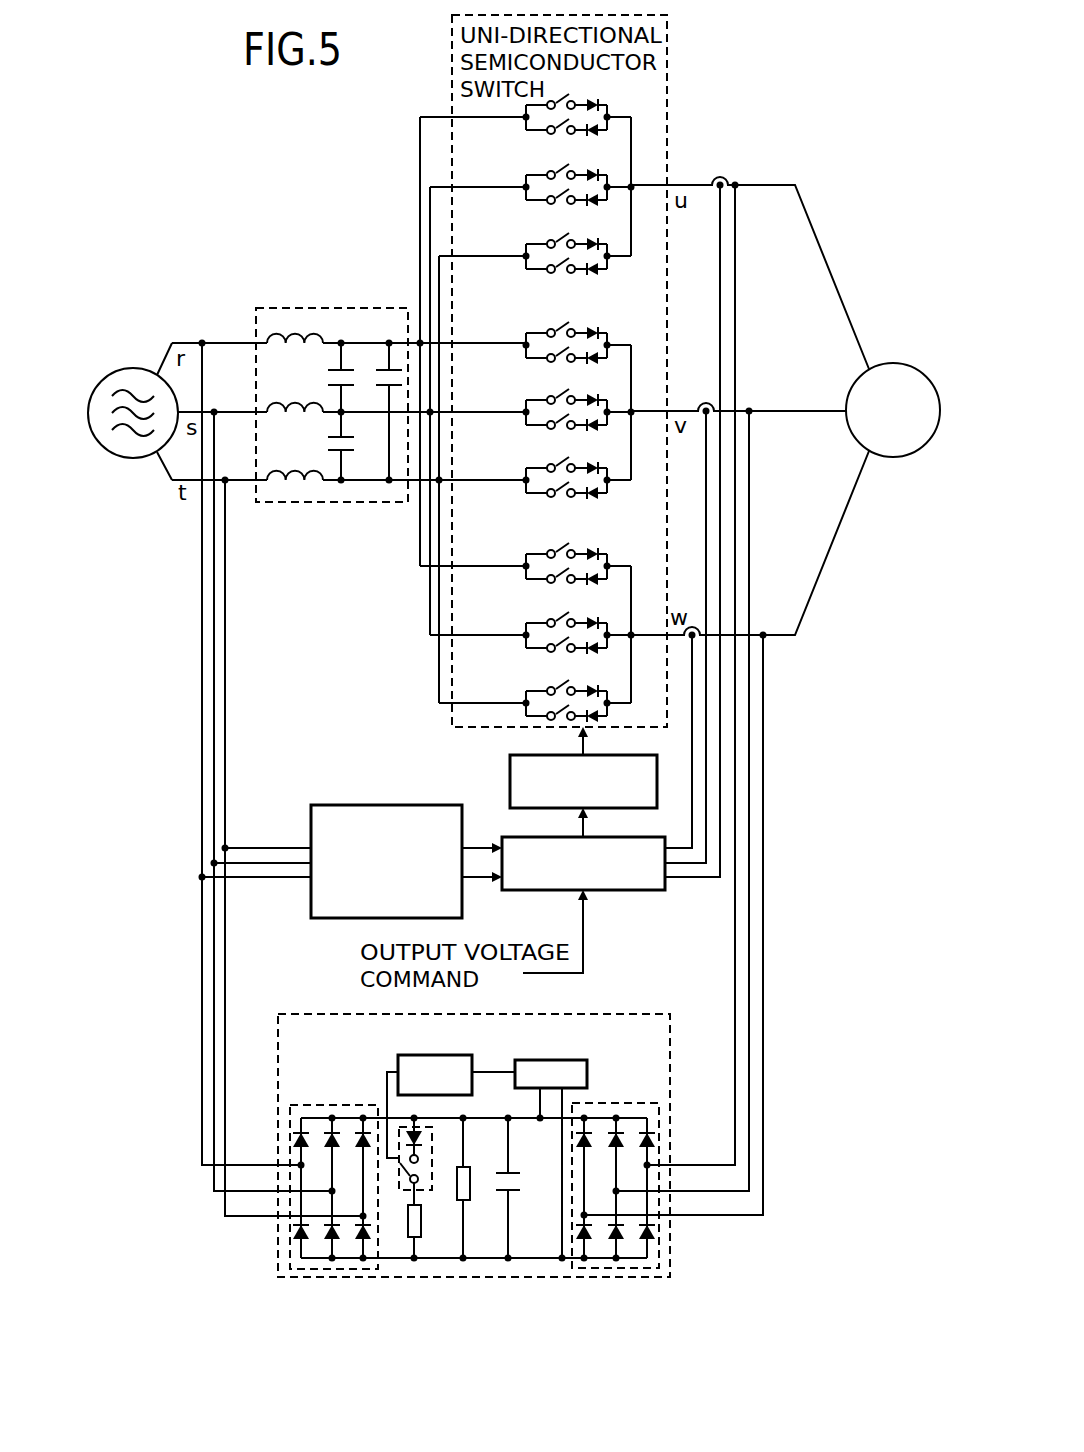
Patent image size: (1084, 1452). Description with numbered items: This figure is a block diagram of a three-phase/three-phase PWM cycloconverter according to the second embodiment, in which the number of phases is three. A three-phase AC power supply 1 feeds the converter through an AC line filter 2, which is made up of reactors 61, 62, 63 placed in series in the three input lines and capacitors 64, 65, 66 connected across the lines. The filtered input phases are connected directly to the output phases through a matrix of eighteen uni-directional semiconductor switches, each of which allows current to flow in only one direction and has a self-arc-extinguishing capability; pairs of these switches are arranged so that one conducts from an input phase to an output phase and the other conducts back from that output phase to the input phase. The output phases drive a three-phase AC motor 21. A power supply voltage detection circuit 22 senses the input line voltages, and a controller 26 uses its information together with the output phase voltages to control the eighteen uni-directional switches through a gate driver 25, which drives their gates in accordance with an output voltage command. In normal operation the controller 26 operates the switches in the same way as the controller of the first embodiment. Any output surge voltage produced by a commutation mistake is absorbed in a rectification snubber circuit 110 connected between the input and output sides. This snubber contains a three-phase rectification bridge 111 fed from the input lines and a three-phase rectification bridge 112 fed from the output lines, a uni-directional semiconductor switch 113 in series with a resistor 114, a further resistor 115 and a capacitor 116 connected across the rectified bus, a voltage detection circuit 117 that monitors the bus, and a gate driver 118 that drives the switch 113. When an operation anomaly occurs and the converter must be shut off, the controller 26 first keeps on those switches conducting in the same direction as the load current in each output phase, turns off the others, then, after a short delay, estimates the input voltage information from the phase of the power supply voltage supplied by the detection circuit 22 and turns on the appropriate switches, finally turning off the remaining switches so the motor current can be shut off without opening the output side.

The three-phase AC power supply 1 is at (133, 368).
The AC line filter 2 is at (326, 305).
The reactor 61 is at (293, 330).
The reactor 62 is at (275, 402).
The reactor 63 is at (275, 472).
The capacitor 64 is at (328, 376).
The capacitor 65 is at (328, 443).
The capacitor 66 is at (389, 365).
The three-phase AC motor 21 is at (895, 363).
The power supply voltage detection circuit 22 is at (358, 805).
The gate driver 25 is at (510, 765).
The controller 26 is at (505, 835).
The rectification snubber circuit 110 is at (657, 1014).
The three-phase rectification bridge 111 is at (301, 1105).
The three-phase rectification bridge 112 is at (655, 1103).
The uni-directional semiconductor switch 113 is at (400, 1178).
The resistor 114 is at (422, 1218).
The resistor 115 is at (472, 1187).
The capacitor 116 is at (522, 1185).
The voltage detection circuit 117 is at (587, 1070).
The gate driver 118 is at (398, 1060).